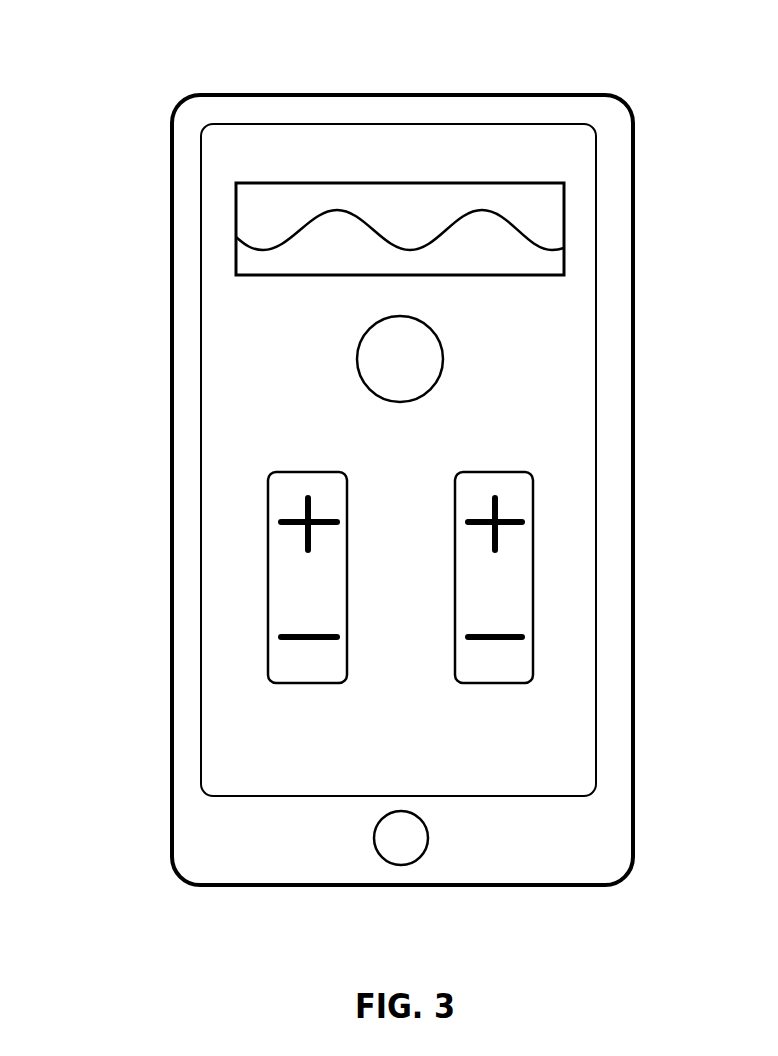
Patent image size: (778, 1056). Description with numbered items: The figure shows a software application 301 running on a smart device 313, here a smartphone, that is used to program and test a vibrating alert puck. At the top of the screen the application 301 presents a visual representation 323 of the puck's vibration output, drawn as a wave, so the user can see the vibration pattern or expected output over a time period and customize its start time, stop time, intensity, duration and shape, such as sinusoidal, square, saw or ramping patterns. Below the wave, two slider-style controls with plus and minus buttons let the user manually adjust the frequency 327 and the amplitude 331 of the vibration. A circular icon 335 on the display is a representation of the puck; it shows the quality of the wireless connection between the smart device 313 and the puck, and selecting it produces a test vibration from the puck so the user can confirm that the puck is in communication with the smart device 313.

The software application 301 is at (136, 91).
The smart device 313 is at (298, 864).
The visual representation 323 is at (334, 302).
The frequency 327 is at (327, 597).
The amplitude 331 is at (513, 597).
The icon 335 is at (421, 372).